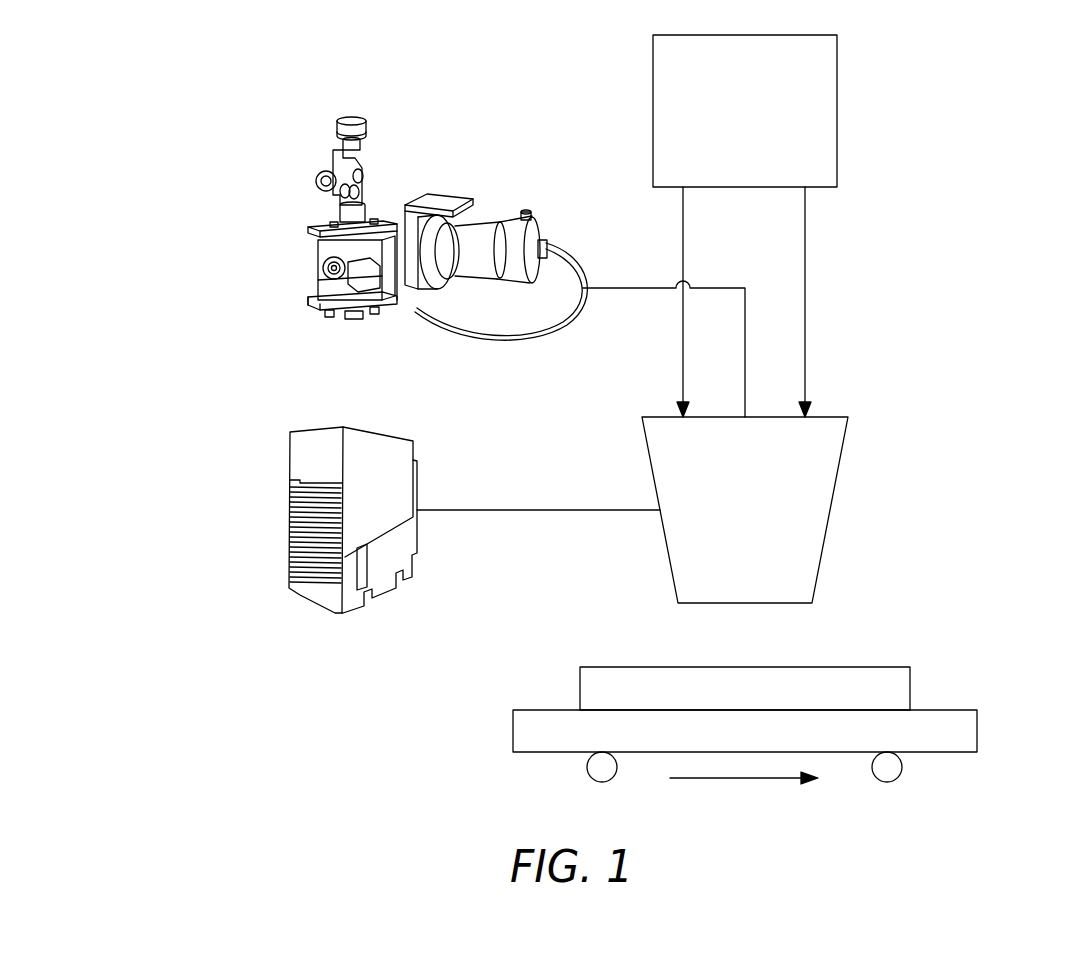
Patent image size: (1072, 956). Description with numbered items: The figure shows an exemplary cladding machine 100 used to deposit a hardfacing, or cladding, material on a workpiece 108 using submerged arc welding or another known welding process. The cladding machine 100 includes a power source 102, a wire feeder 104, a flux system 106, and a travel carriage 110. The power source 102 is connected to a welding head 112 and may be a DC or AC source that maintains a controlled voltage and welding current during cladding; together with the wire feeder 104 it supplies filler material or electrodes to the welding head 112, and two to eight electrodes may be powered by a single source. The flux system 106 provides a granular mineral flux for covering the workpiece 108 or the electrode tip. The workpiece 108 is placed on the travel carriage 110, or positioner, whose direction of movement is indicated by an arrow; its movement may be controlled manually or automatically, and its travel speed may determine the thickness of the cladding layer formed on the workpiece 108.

The cladding machine 100 is at (119, 132).
The power source 102 is at (290, 515).
The wire feeder 104 is at (449, 196).
The flux system 106 is at (837, 110).
The workpiece 108 is at (910, 688).
The travel carriage 110 is at (977, 731).
The welding head 112 is at (832, 512).